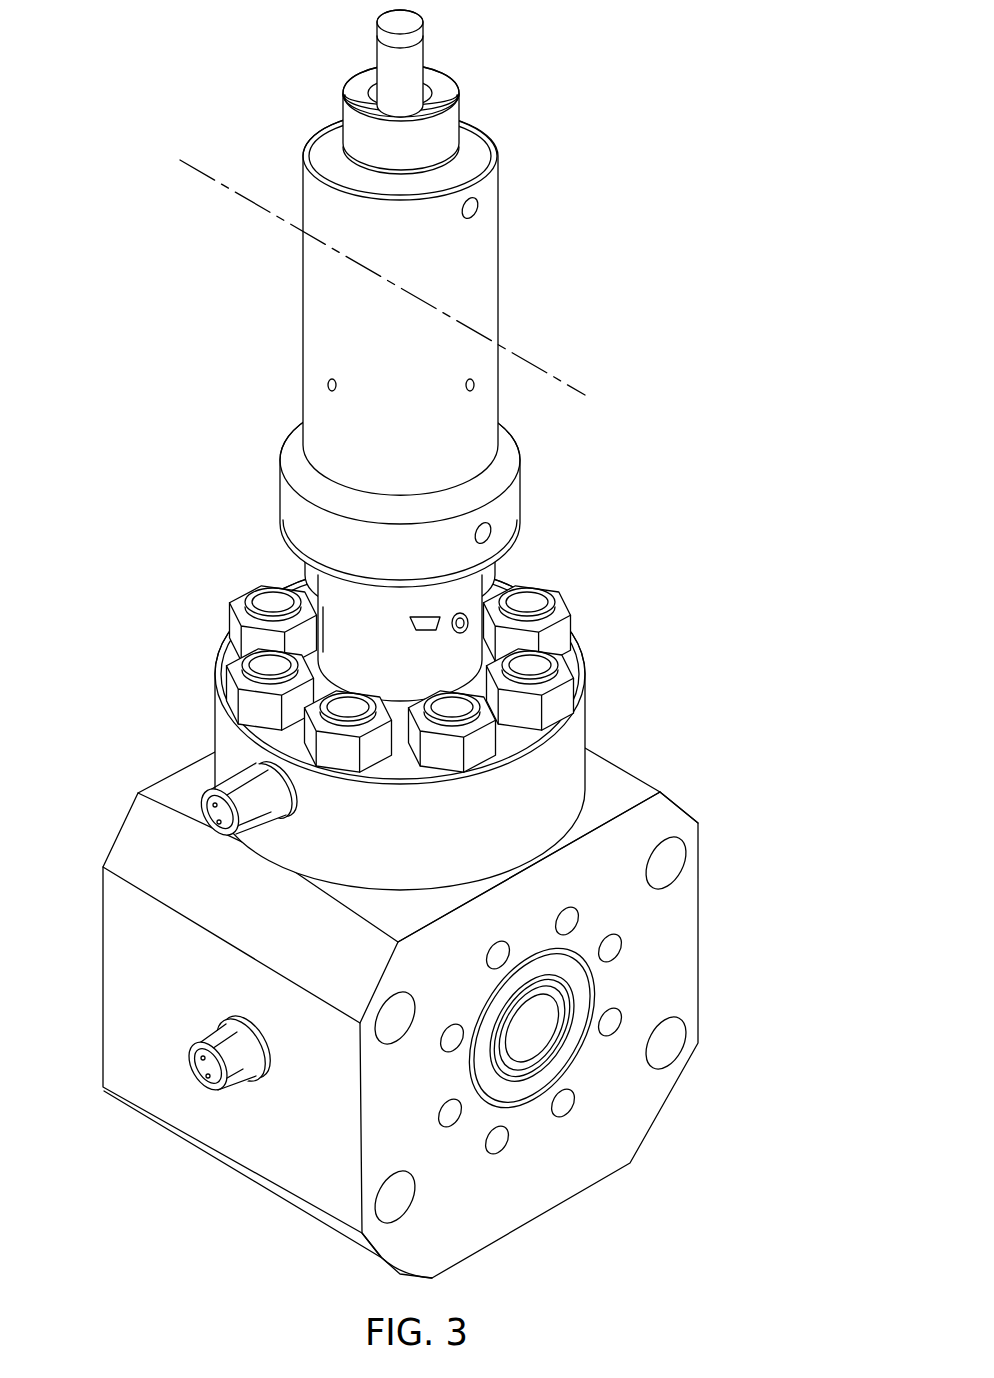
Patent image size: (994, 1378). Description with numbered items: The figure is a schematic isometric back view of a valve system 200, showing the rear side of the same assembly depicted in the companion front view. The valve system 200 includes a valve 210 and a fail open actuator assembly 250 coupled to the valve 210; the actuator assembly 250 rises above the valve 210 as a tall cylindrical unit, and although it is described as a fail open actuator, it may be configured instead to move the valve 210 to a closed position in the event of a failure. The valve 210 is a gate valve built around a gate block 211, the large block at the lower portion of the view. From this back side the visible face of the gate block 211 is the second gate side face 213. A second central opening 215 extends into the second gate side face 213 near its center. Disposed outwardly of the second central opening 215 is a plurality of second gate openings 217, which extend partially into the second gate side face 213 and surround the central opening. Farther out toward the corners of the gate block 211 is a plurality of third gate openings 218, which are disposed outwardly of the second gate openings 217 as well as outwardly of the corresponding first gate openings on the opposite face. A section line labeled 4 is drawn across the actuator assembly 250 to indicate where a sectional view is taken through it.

The valve system 200 is at (435, 644).
The valve 210 is at (150, 1146).
The gate block 211 is at (315, 1168).
The second gate side face 213 is at (563, 1163).
The second central opening 215 is at (537, 1033).
The second gate openings 217 is at (452, 1122).
The third gate openings 218 is at (675, 861).
The fail open actuator assembly 250 is at (522, 236).
The section line 4- 4 is at (180, 160).